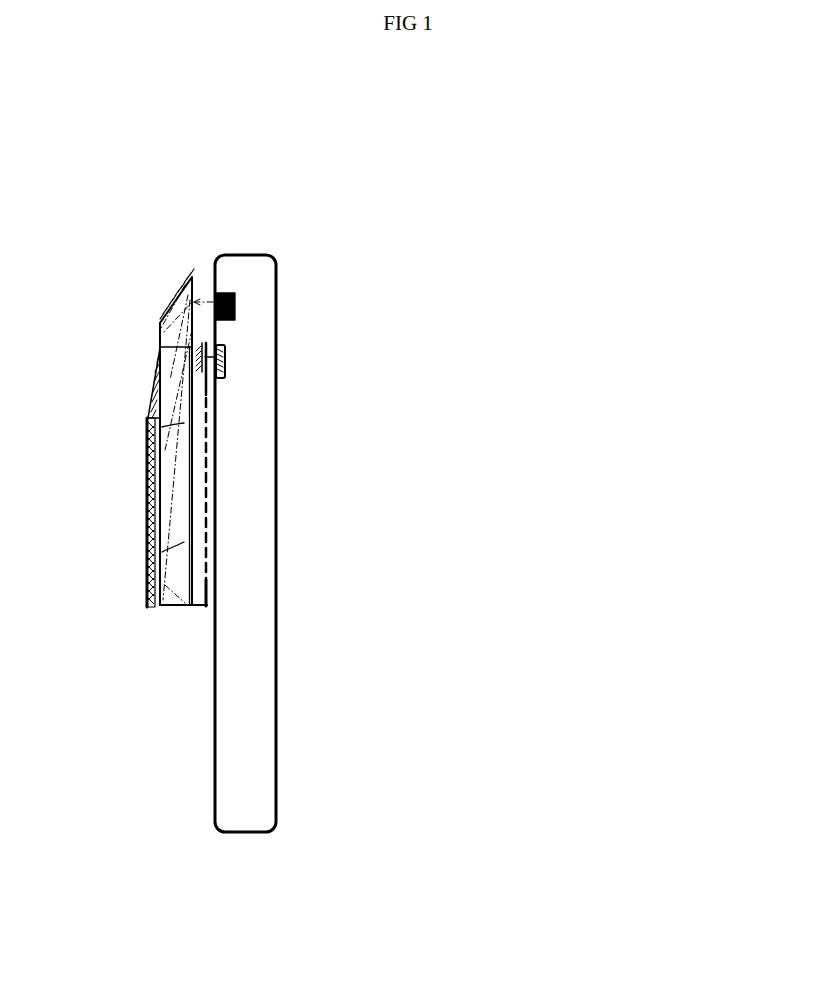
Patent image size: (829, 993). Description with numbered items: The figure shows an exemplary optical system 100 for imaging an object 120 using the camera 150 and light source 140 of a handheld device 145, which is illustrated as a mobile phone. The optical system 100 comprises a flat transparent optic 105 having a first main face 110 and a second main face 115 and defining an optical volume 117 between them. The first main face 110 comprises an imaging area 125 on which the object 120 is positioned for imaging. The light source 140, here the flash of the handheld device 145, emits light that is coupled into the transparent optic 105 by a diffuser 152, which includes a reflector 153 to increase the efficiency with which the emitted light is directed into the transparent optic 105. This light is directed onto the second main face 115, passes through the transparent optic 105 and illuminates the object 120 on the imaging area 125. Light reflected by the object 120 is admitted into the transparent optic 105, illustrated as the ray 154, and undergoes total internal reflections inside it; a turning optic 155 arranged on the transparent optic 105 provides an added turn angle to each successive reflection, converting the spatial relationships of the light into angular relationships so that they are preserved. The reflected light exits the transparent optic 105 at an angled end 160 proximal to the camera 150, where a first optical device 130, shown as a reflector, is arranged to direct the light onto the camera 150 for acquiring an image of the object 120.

The optical system 100 is at (153, 163).
The transparent optic 105 is at (152, 368).
The first main face 110 is at (159, 332).
The second main face 115 is at (158, 348).
The optical volume 117 is at (150, 567).
The object 120 is at (150, 497).
The imaging area 125 is at (157, 608).
The first optical device 130 is at (174, 270).
The light source 140 is at (226, 357).
The handheld device 145 is at (259, 247).
The camera 150 is at (235, 305).
The diffuser 152 is at (207, 588).
The reflector 153 is at (226, 362).
The ray 154 is at (150, 430).
The turning optic 155 is at (150, 532).
The angled end 160 is at (163, 312).